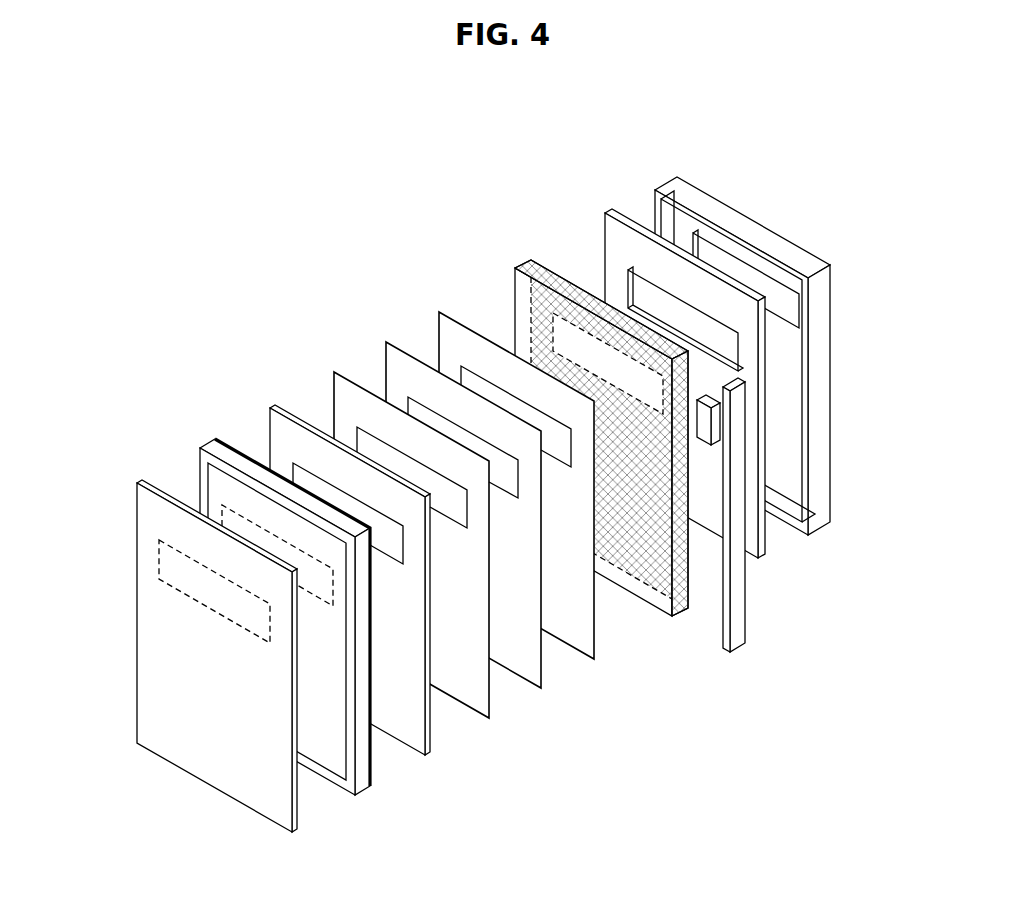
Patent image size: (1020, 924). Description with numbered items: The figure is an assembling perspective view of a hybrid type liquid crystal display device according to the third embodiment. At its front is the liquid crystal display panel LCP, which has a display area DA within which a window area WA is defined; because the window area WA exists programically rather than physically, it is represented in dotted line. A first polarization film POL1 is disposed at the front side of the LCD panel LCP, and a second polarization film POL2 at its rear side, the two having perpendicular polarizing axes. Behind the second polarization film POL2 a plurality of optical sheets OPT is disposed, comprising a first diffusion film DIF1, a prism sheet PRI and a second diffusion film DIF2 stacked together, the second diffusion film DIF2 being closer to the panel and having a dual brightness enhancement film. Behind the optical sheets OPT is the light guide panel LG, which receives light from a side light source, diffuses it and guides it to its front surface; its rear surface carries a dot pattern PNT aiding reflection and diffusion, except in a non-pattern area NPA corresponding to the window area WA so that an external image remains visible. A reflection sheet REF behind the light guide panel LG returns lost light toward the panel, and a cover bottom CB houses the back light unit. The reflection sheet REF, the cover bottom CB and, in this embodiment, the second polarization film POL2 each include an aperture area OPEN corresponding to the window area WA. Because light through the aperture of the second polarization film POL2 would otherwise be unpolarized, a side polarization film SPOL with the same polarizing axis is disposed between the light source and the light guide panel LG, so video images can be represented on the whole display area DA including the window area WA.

The first polarization film POL1 is at (293, 834).
The display area DA is at (328, 773).
The liquid crystal display panel LCP is at (300, 650).
The second polarization film POL2 is at (413, 757).
The second diffusion film DIF2 is at (478, 720).
The prism sheet PRI is at (531, 690).
The first diffusion film DIF1 is at (582, 660).
The optical sheets OPT is at (479, 552).
The light guide panel LG is at (575, 442).
The dot pattern PNT is at (552, 262).
The non-pattern area NPA is at (553, 330).
The side polarization film SPOL is at (710, 427).
The reflection sheet REF is at (765, 556).
The cover bottom CB is at (817, 524).
The aperture area OPEN is at (474, 373).
The window area WA is at (238, 513).